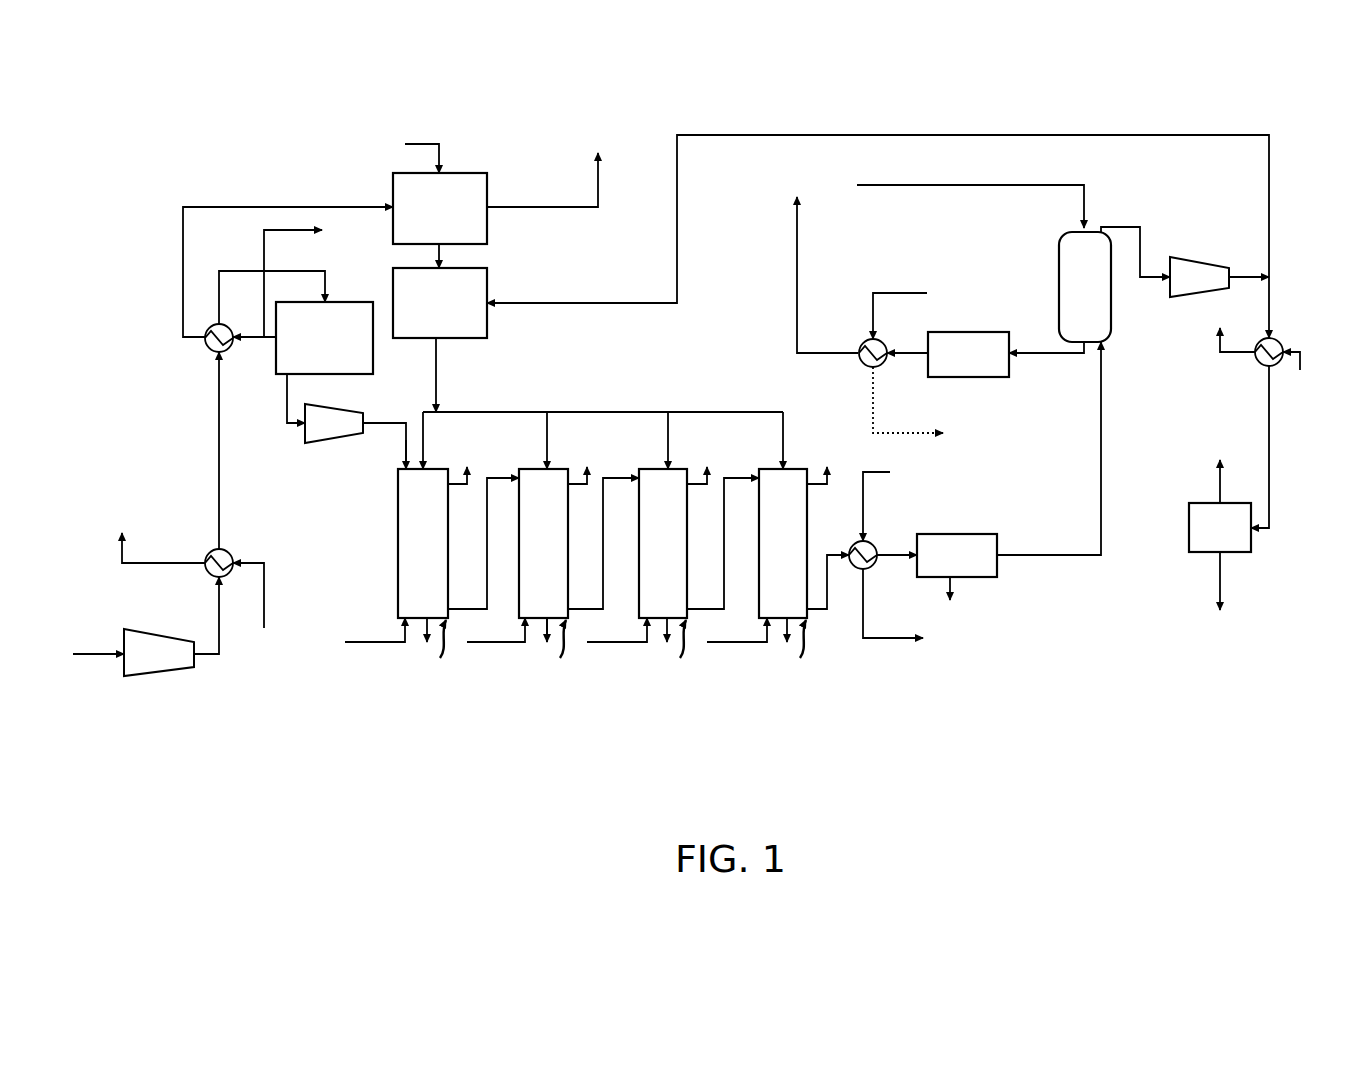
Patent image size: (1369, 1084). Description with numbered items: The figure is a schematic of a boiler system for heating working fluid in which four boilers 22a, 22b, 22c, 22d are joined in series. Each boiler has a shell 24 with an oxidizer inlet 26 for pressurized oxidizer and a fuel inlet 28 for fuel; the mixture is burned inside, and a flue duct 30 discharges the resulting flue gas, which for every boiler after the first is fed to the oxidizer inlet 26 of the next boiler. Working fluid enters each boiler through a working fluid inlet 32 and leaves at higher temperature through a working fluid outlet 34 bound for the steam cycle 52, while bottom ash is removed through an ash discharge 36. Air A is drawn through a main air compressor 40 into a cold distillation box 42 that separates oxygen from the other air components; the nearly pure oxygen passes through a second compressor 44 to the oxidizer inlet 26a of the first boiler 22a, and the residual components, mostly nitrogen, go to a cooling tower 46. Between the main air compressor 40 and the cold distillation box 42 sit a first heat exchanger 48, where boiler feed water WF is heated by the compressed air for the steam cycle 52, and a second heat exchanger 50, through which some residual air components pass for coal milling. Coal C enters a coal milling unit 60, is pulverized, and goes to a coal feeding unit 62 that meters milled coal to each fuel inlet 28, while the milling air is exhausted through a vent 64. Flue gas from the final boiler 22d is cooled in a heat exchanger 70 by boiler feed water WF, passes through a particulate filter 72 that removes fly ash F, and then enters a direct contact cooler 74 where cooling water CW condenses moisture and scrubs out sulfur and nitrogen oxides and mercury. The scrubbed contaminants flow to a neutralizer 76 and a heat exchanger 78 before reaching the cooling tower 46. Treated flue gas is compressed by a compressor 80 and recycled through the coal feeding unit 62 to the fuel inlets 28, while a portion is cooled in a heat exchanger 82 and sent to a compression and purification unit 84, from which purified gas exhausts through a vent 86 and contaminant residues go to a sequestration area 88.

The first boiler 22a is at (448, 642).
The second boiler 22b is at (568, 642).
The third boiler 22c is at (688, 642).
The final boiler 22d is at (808, 642).
The shell 24 is at (398, 555).
The oxidizer inlet 26 is at (755, 470).
The oxidizer inlet of the first boiler 26a is at (405, 467).
The fuel inlet 28 is at (428, 468).
The flue duct 30 is at (613, 478).
The working fluid inlet 32 is at (347, 642).
The working fluid outlet 34 is at (809, 472).
The ash discharge 36 is at (547, 626).
The main air compressor 40 is at (160, 678).
The cold distillation box 42 is at (324, 338).
The second compressor 44 is at (303, 444).
The cooling tower 46 is at (759, 262).
The first heat exchanger 48 is at (213, 550).
The second heat exchanger 50 is at (206, 348).
The steam cycle 52 is at (543, 510).
The coal milling unit 60 is at (335, 235).
The coal feeding unit 62 is at (831, 273).
The vent 64 is at (548, 169).
The heat exchanger 70 is at (872, 542).
The particulate filter 72 is at (1009, 476).
The direct contact cooler 74 is at (1008, 255).
The neutralizer 76 is at (957, 344).
The heat exchanger 78 is at (862, 342).
The compressor 80 is at (1183, 297).
The heat exchanger 82 is at (1281, 341).
The compression and purification unit 84 is at (1240, 472).
The vent 86 is at (1222, 469).
The sequestration area 88 is at (1222, 599).